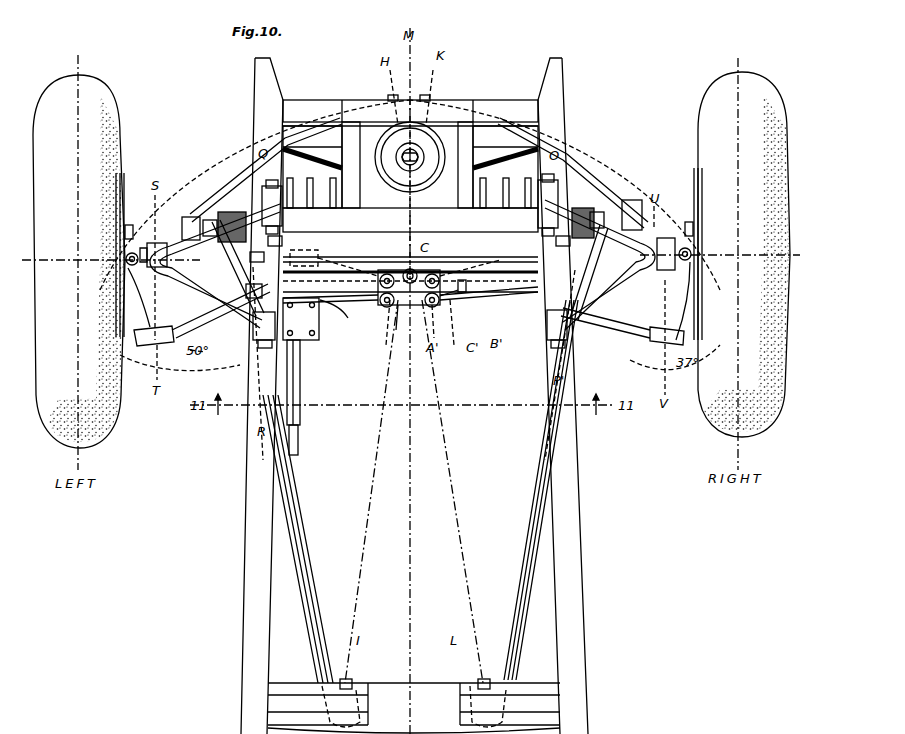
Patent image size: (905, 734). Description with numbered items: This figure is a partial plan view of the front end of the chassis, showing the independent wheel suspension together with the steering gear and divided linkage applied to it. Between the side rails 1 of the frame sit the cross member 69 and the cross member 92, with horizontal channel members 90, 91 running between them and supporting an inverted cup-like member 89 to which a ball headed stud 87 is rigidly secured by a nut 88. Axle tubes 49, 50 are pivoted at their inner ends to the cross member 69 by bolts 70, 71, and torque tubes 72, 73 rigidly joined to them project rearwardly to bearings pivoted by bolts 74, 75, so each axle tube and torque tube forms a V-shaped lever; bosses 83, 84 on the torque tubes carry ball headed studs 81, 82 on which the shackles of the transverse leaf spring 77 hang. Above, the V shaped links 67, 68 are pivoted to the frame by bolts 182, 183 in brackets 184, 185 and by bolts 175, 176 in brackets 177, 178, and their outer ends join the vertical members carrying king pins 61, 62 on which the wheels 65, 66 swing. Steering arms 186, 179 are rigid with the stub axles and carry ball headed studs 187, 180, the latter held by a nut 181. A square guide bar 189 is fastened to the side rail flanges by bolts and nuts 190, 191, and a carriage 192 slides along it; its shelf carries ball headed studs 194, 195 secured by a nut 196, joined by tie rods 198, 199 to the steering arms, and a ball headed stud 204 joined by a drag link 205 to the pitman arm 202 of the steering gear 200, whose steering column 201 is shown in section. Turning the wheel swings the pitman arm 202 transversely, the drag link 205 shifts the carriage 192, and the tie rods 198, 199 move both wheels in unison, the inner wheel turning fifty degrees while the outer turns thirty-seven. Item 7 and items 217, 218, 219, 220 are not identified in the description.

The side rail 1 is at (250, 472).
The rear cross member 7 is at (414, 708).
The axle tube 49 is at (586, 170).
The axle tube 50 is at (258, 170).
The king pin 61 is at (148, 250).
The king pin 62 is at (692, 250).
The wheel 65 is at (79, 261).
The wheel 66 is at (744, 254).
The V shaped link 67 is at (215, 266).
The V shaped link 68 is at (612, 292).
The cross member 69 is at (485, 100).
The bolt 70 is at (390, 96).
The bolt 71 is at (428, 96).
The torque tube 72 is at (528, 482).
The torque tube 73 is at (292, 500).
The bolt 74 is at (352, 680).
The bolt 75 is at (480, 680).
The transverse leaf spring 77 is at (320, 195).
The ball headed stud 81 is at (210, 219).
The ball headed stud 82 is at (600, 218).
The boss 83 is at (190, 216).
The boss 84 is at (636, 212).
The ball headed stud 87 is at (425, 133).
The nut 88 is at (400, 167).
The inverted cup-like member 89 is at (420, 168).
The channel member 90 is at (470, 162).
The channel member 91 is at (345, 143).
The cross member 92 is at (410, 229).
The bolt 175 is at (540, 188).
The bolt 176 is at (552, 346).
The bracket 177 is at (552, 212).
The bracket 178 is at (548, 338).
The steering arm 179 is at (684, 300).
The ball headed stud 180 is at (658, 342).
The nut 181 is at (238, 268).
The bolt 182 is at (278, 196).
The bolt 183 is at (262, 348).
The bracket 184 is at (275, 218).
The bracket 185 is at (258, 340).
The steering arm 186 is at (142, 300).
The ball headed stud 187 is at (150, 365).
The guide bar 189 is at (343, 313).
The bolt and nut 190 is at (266, 276).
The bolt and nut 191 is at (410, 278).
The carriage 192 is at (410, 305).
The ball headed stud 194 is at (466, 336).
The ball headed stud 195 is at (387, 336).
The nut 196 is at (545, 262).
The tie rod 198 is at (500, 300).
The tie rod 199 is at (340, 302).
The steering gear 200 is at (322, 332).
The steering column 201 is at (300, 392).
The pitman arm 202 is at (313, 250).
The ball headed stud 204 is at (445, 270).
The drag link 205 is at (355, 270).
The pivot pin 217 is at (396, 322).
The center pivot 218 is at (410, 268).
The pin 219 is at (462, 280).
The pin 220 is at (446, 303).